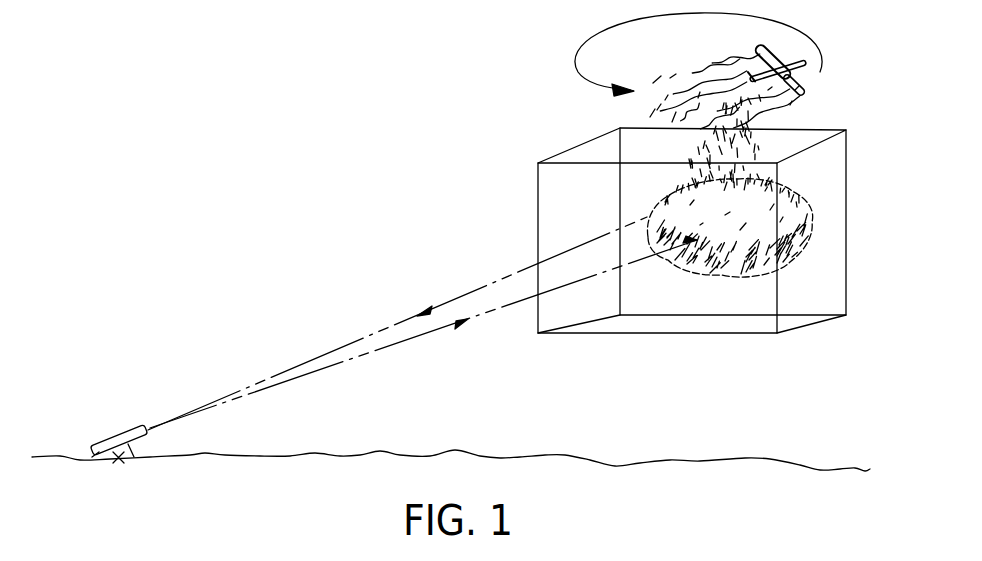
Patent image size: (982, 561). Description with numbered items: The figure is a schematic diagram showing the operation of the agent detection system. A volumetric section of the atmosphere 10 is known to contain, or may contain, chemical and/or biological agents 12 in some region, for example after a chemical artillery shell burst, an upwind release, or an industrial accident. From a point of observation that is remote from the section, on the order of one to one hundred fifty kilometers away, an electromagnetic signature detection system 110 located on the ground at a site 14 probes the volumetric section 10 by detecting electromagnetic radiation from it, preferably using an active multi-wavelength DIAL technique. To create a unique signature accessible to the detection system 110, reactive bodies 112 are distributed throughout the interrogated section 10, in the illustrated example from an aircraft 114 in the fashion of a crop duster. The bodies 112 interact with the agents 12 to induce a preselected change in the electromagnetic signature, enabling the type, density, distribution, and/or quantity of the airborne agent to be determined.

The volumetric section of the atmosphere 10 is at (538, 222).
The chemical and/or biological agents 12 is at (795, 236).
The ground location of lidar 14 is at (125, 458).
The electromagnetic signature detection system 110 is at (113, 440).
The reactive probe or body 112 is at (713, 62).
The aircraft 114 is at (770, 57).